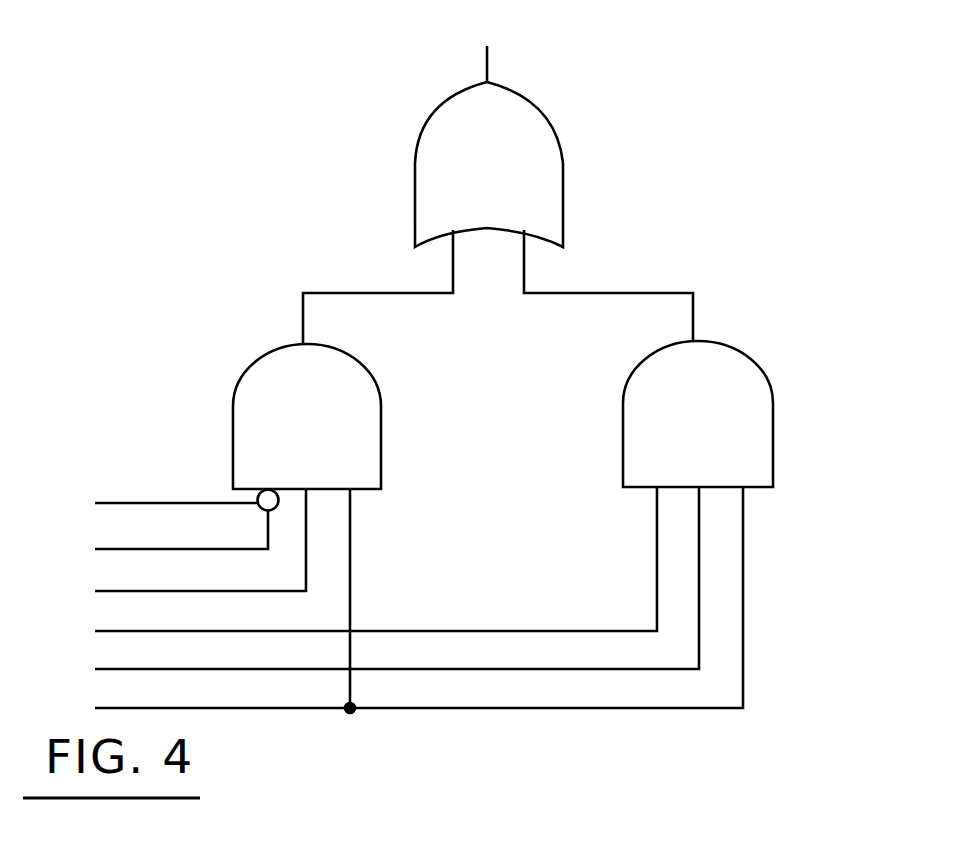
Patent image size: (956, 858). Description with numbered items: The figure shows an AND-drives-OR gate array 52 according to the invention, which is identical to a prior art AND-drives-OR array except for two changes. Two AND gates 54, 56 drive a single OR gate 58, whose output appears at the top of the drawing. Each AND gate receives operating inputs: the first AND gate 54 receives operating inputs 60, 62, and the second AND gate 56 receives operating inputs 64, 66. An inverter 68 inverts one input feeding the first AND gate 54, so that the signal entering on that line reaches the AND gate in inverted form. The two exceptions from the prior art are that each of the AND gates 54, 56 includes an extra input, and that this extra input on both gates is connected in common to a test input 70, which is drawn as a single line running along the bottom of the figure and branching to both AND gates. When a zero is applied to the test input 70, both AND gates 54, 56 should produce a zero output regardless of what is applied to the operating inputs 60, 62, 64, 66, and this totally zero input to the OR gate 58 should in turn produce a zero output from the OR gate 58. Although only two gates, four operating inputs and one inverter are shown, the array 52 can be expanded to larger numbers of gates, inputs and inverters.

The AND-drives-OR gate array 52 is at (714, 232).
The AND gate 54 is at (320, 450).
The AND gate 56 is at (716, 437).
The OR gate 58 is at (506, 192).
The operating input 60 is at (159, 537).
The operating input 62 is at (178, 547).
The operating input 64 is at (354, 566).
The operating input 66 is at (375, 585).
The inverter 68 is at (156, 504).
The test input 70 is at (397, 605).